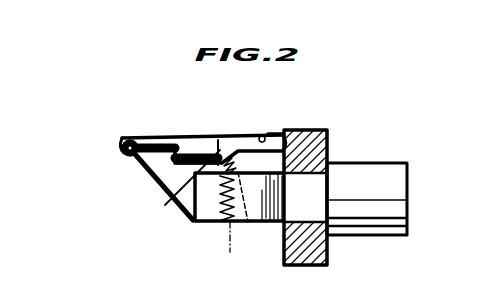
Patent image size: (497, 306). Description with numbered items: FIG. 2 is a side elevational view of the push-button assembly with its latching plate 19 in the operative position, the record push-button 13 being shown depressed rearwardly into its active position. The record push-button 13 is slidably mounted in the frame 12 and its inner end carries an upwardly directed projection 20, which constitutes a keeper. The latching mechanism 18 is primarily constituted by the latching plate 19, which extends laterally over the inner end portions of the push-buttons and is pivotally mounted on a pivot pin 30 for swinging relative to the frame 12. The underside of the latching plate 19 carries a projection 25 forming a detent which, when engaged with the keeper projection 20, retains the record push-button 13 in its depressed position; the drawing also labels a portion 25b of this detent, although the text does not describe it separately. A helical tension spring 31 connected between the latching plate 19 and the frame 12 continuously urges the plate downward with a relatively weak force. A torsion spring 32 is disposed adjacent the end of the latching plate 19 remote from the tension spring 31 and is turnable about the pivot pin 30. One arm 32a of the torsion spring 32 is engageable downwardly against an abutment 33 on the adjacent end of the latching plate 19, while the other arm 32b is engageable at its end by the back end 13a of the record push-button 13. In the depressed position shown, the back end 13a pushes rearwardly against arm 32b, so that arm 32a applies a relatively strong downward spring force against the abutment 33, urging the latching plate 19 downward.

The frame 12 is at (326, 130).
The record push-button 13 is at (379, 161).
The back end of push-button 13a is at (188, 222).
The latching mechanism 18 is at (275, 109).
The latching plate 19 is at (147, 136).
The projection 20 is at (178, 201).
The projection 25 is at (258, 138).
The pin hook 25b is at (226, 158).
The pivot pin 30 is at (123, 152).
The helical tension spring 31 is at (242, 222).
The torsion spring 32 is at (128, 171).
The arm of torsion spring 32a is at (198, 136).
The arm of torsion spring 32b is at (150, 187).
The abutment 33 is at (278, 134).